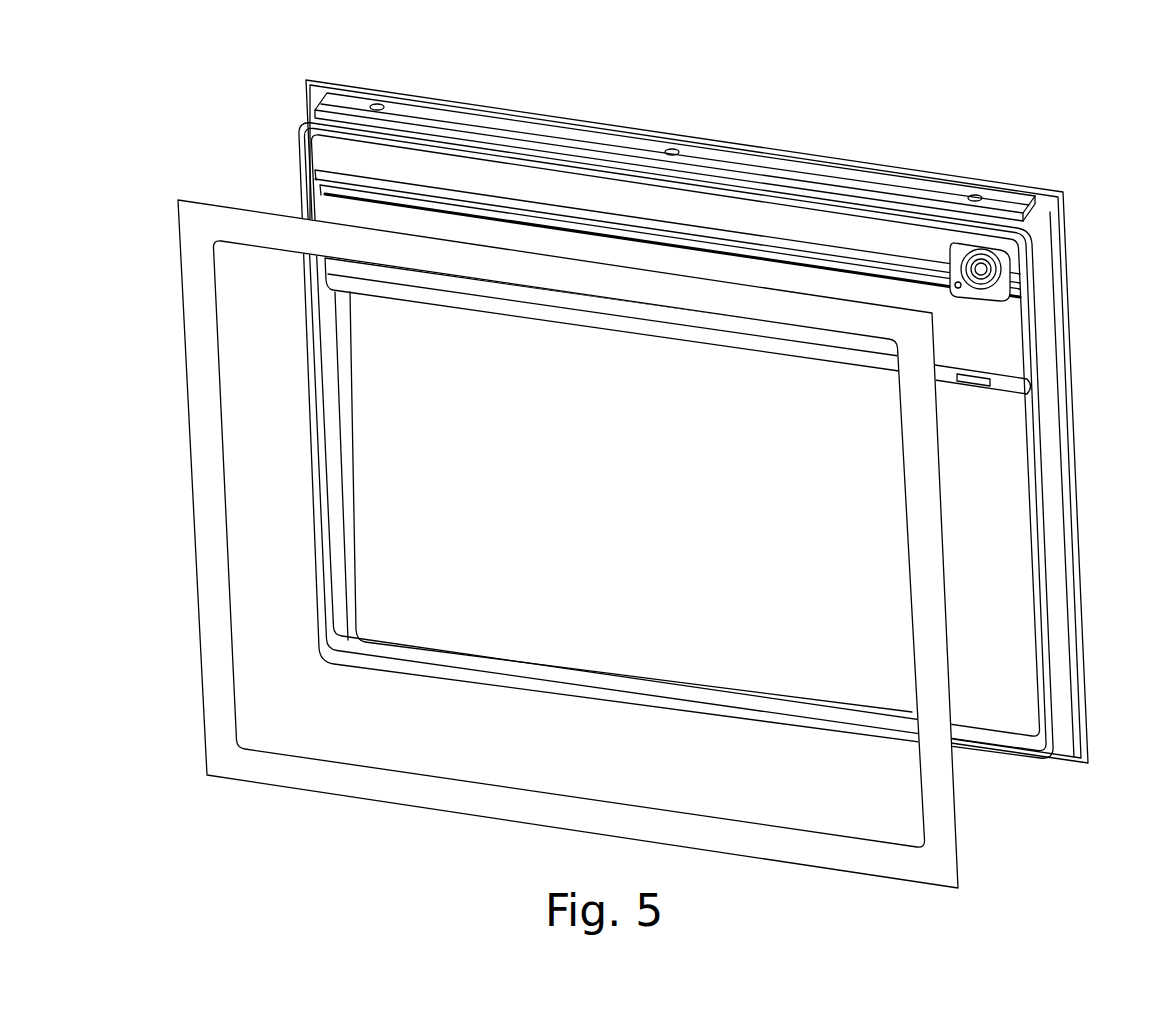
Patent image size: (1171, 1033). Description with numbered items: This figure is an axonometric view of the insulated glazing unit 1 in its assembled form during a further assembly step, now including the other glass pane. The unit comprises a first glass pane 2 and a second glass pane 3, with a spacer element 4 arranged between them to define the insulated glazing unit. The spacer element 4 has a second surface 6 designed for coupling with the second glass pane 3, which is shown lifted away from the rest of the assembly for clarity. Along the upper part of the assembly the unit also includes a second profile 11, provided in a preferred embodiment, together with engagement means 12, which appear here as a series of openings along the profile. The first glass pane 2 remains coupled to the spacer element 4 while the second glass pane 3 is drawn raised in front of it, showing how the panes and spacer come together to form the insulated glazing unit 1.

The insulated glazing unit 1 is at (1082, 166).
The first glass pane 2 is at (1073, 284).
The second glass pane 3 is at (960, 848).
The spacer element 4 is at (1083, 766).
The second surface 6 is at (1043, 772).
The second profile 11 is at (558, 130).
The engagement means 12 is at (377, 105).